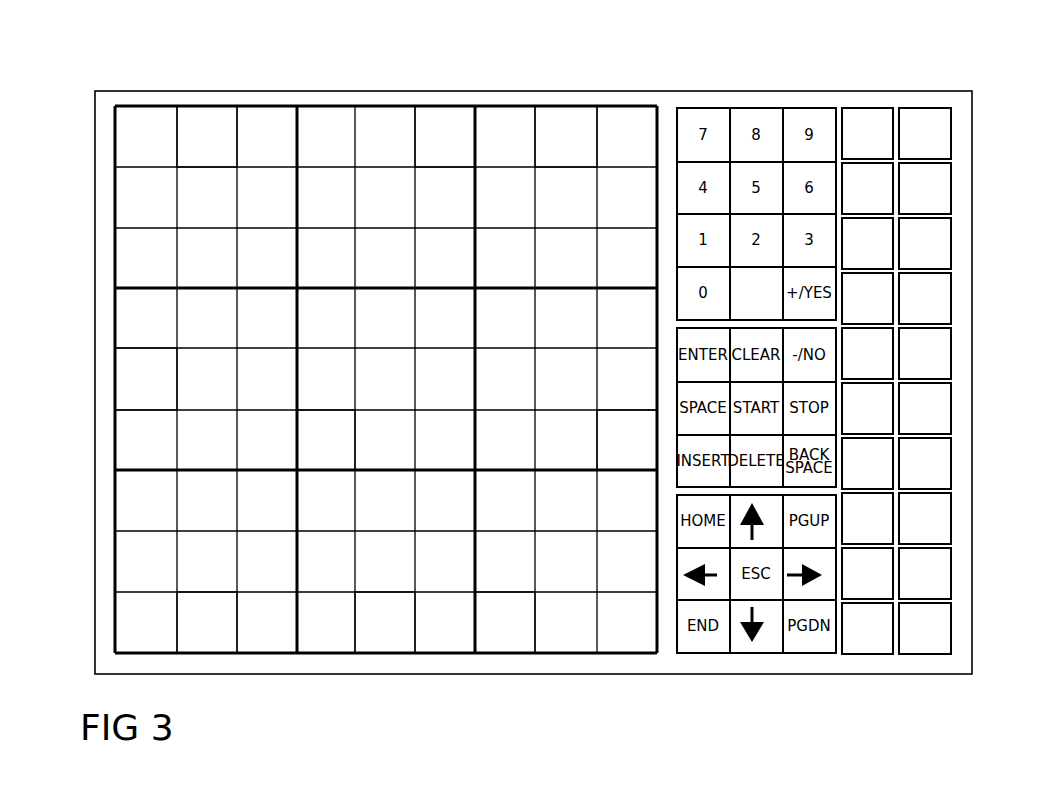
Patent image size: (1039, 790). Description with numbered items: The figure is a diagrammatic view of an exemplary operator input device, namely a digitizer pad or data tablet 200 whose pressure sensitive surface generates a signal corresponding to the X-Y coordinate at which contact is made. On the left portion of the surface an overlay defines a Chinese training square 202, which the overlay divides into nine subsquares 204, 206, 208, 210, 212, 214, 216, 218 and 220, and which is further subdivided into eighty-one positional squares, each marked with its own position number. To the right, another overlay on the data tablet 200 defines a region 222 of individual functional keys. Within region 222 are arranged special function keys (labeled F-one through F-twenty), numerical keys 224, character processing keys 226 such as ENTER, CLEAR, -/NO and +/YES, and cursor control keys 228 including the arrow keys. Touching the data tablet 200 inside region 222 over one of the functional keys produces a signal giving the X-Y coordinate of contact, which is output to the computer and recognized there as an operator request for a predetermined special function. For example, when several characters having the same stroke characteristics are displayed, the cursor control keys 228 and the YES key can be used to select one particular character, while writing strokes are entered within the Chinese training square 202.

The data tablet 200 is at (95, 275).
The Chinese training square 202 is at (316, 96).
The subsquare 204 is at (575, 128).
The subsquare 206 is at (620, 444).
The subsquare 208 is at (492, 639).
The subsquare 210 is at (455, 128).
The subsquare 212 is at (312, 439).
The subsquare 214 is at (372, 639).
The subsquare 216 is at (224, 128).
The subsquare 218 is at (138, 382).
The subsquare 220 is at (193, 639).
The region of individual functional keys 222 is at (840, 101).
The numerical keys 224 is at (772, 123).
The character processing keys 226 is at (812, 371).
The cursor control keys 228 is at (738, 642).